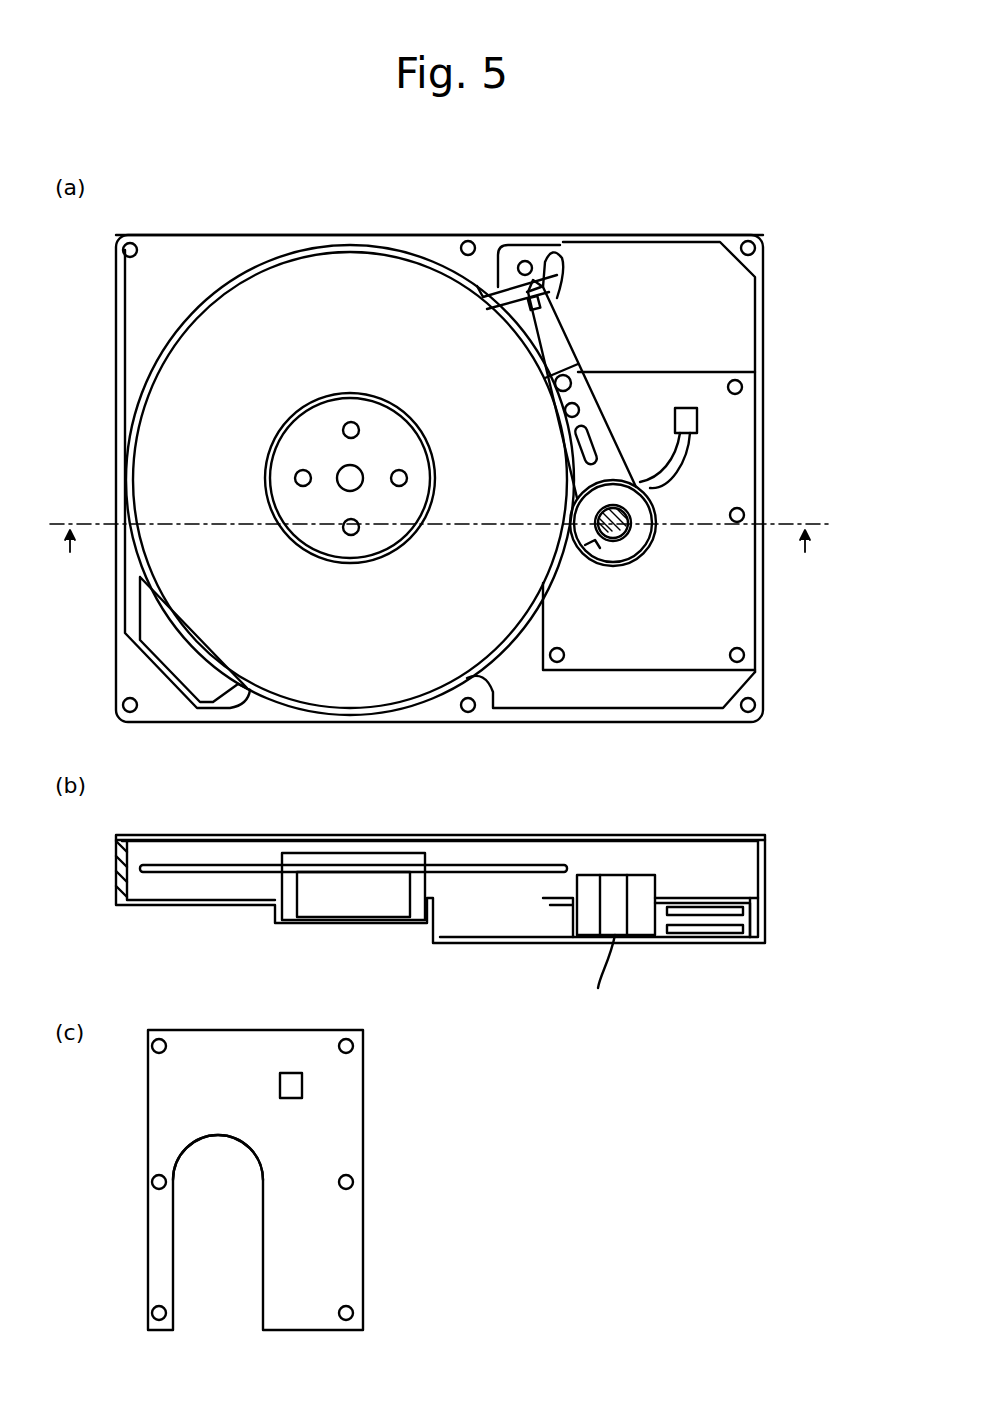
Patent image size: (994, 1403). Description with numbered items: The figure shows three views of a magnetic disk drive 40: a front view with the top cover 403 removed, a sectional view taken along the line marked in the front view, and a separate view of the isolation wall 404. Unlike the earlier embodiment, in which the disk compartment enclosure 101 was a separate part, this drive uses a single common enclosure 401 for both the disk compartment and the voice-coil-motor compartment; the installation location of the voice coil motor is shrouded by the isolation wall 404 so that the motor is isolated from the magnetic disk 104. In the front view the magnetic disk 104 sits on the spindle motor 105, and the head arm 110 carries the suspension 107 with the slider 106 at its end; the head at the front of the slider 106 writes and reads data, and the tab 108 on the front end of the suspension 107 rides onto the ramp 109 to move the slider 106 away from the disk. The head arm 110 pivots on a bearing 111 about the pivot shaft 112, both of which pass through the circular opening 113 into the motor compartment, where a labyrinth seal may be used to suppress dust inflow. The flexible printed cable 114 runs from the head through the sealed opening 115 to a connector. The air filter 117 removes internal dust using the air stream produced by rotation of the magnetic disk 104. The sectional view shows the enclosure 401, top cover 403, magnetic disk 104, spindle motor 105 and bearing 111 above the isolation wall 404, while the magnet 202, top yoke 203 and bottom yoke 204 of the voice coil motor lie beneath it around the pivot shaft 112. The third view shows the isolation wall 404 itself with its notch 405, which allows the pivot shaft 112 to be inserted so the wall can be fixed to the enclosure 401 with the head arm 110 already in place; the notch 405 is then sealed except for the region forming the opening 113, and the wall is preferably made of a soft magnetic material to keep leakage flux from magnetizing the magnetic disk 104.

The magnetic disk drive 40 is at (787, 253).
The disk compartment enclosure 101 is at (374, 240).
The magnetic disk 104 is at (166, 466).
The spindle motor 105 is at (336, 405).
The slider 106 is at (542, 303).
The suspension 107 is at (556, 345).
The tab 108 is at (560, 262).
The ramp 109 is at (504, 245).
The head arm 110 is at (572, 383).
The bearing 111 is at (633, 545).
The pivot shaft 112 is at (610, 504).
The opening 113 is at (594, 546).
The flexible printed cable 114 is at (650, 488).
The opening 115 is at (688, 408).
The air filter 117 is at (140, 628).
The enclosure 401 is at (116, 875).
The top cover 403 is at (384, 835).
The isolation wall 404 is at (752, 583).
The notch 405 is at (263, 1213).
The magnet 202 is at (745, 925).
The top yoke 203 is at (723, 907).
The bottom yoke 204 is at (693, 935).